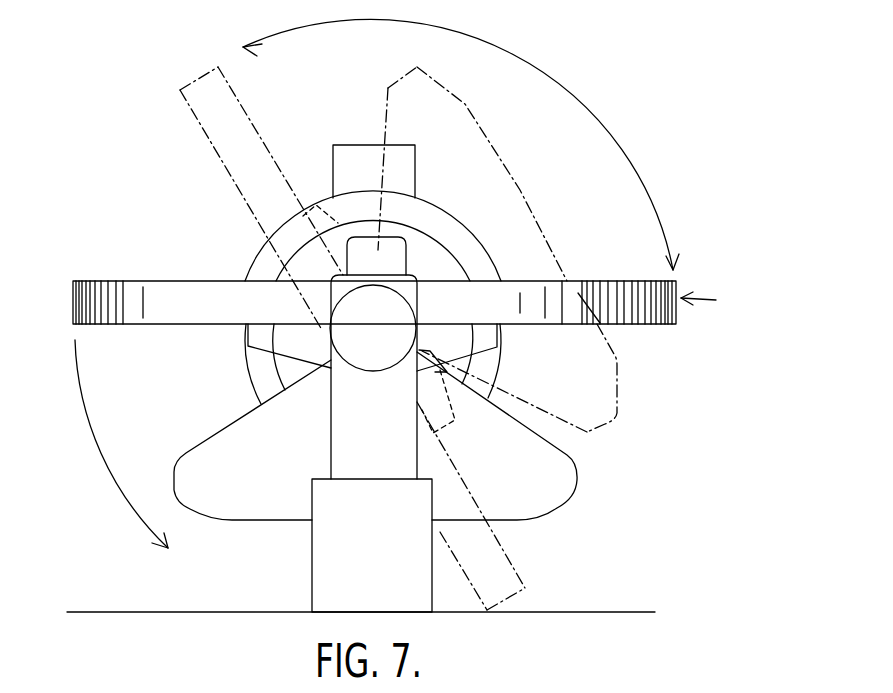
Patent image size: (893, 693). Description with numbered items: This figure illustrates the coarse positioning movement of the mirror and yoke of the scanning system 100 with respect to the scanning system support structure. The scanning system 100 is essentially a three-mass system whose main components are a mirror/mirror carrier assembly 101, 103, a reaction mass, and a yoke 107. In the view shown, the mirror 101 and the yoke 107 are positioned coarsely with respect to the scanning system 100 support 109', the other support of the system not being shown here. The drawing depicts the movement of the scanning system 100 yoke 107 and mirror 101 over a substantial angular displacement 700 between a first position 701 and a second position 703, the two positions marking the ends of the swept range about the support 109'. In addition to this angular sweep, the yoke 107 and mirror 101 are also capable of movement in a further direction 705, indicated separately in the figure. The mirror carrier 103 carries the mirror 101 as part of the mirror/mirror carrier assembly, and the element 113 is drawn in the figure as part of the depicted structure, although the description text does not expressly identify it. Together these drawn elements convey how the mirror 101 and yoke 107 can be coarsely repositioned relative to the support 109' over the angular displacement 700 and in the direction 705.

The scanning system 100 is at (123, 186).
The mirror 101 is at (255, 131).
The mirror carrier 103 is at (487, 333).
The yoke 107 is at (513, 192).
The support 109' is at (372, 545).
The ring 113 is at (248, 383).
The angular displacement 700 is at (548, 72).
The position 701 is at (204, 72).
The position 703 is at (725, 301).
The direction 705 is at (110, 467).